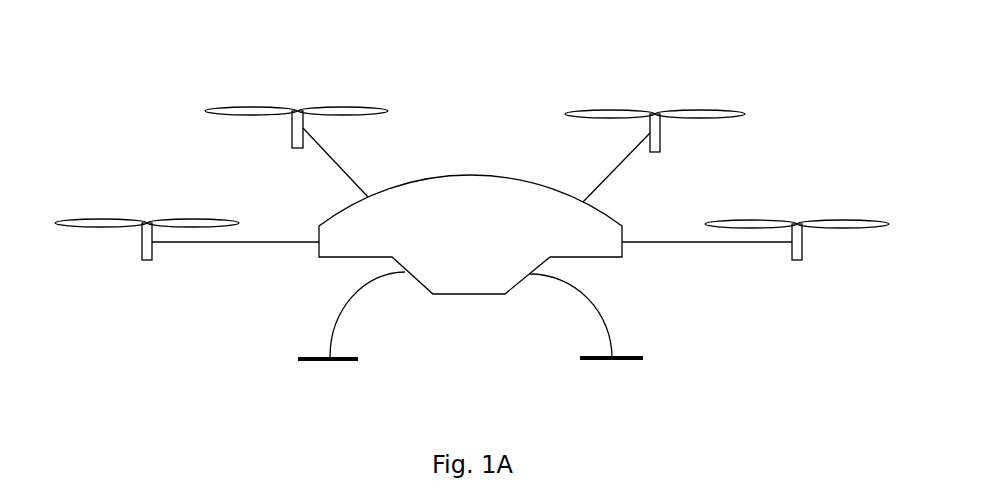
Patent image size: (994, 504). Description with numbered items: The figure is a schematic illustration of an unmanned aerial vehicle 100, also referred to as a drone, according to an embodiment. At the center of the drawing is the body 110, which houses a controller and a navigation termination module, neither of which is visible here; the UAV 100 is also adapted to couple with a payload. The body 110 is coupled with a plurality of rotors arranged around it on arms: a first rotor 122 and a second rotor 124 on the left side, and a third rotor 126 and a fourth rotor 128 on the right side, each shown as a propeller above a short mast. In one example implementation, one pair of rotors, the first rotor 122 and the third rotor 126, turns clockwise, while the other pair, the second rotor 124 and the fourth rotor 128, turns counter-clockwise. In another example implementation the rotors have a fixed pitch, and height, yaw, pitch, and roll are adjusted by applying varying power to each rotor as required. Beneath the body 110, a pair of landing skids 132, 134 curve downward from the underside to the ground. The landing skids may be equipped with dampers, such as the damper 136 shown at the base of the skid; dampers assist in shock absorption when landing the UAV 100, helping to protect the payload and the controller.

The unmanned aerial vehicle 100 is at (444, 57).
The body 110 is at (428, 177).
The first rotor 122 is at (142, 254).
The second rotor 124 is at (292, 137).
The third rotor 126 is at (660, 143).
The fourth rotor 128 is at (802, 252).
The landing skid 132 is at (352, 320).
The landing skid 134 is at (593, 320).
The damper 136 is at (298, 358).